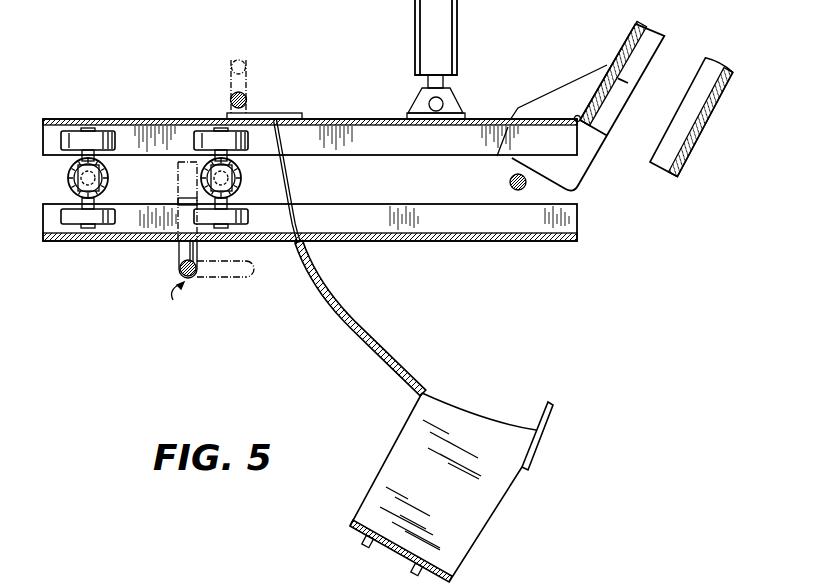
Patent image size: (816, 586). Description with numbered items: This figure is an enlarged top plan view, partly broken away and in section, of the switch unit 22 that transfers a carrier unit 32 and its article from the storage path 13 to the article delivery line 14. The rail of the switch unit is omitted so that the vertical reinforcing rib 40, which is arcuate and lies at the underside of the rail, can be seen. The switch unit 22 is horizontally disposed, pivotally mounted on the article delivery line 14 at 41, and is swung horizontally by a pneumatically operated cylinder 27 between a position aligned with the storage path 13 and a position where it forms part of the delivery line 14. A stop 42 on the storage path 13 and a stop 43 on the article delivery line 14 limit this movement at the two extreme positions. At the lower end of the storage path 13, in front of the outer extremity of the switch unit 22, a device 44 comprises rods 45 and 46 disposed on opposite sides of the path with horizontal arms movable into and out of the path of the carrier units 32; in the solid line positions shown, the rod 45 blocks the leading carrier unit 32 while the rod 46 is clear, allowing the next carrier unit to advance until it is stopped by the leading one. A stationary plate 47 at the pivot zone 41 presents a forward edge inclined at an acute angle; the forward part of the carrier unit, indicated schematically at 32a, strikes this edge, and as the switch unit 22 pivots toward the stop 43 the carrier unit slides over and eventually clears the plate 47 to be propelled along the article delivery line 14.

The storage path 13 is at (146, 118).
The switch unit 22 is at (350, 119).
The pneumatically operated cylinder 27 is at (457, 31).
The stop 42 is at (288, 113).
The carrier unit 32 is at (103, 226).
The rod 46 is at (178, 248).
The device 44 is at (186, 301).
The forward part of the carrier unit 32a is at (510, 183).
The stationary plate 47 is at (585, 175).
The pivot 41 is at (577, 117).
The article delivery line 14 is at (689, 165).
The rod 45 is at (247, 196).
The vertical reinforcing rib 40 is at (347, 337).
The stop 43 is at (547, 421).